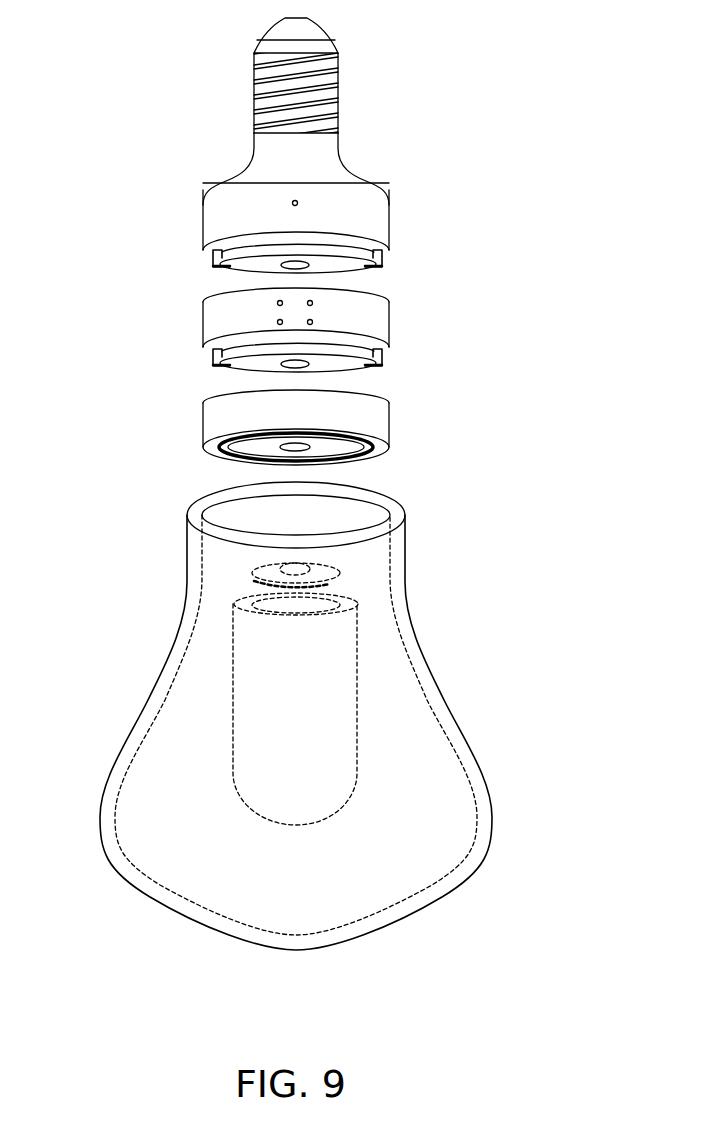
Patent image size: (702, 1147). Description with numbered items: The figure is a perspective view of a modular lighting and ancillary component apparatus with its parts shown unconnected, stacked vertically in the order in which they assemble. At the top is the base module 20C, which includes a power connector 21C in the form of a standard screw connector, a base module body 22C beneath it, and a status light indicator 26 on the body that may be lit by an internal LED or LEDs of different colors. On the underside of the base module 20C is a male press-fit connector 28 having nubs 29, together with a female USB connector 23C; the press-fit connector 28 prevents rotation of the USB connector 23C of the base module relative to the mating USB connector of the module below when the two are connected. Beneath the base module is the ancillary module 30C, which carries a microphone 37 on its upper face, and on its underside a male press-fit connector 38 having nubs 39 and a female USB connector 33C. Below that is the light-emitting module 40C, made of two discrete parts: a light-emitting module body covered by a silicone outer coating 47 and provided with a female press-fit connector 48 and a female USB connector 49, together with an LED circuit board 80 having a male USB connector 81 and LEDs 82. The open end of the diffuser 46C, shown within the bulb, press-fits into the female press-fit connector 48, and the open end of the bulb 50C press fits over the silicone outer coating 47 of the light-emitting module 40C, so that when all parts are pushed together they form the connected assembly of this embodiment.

The base module 20C is at (353, 168).
The power connector 21C is at (283, 105).
The base module body 22C is at (253, 163).
The status light indicator 26 is at (298, 204).
The male press-fit connector 28 is at (255, 248).
The nubs 29 is at (213, 260).
The female USB connector 23C is at (224, 268).
The ancillary module 30C is at (380, 322).
The microphone 37 is at (280, 302).
The male press-fit connector 38 is at (347, 352).
The nubs 39 is at (213, 360).
The female USB connector 33C is at (303, 367).
The light-emitting module 40C is at (373, 420).
The silicone outer coating 47 is at (203, 448).
The female press-fit connector 48 is at (250, 447).
The female USB connector 49 is at (303, 450).
The bulb 50C is at (447, 768).
The diffuser 46C is at (360, 673).
The LED circuit board 80 is at (253, 578).
The male USB connector 81 is at (307, 567).
The LEDs 82 is at (257, 586).